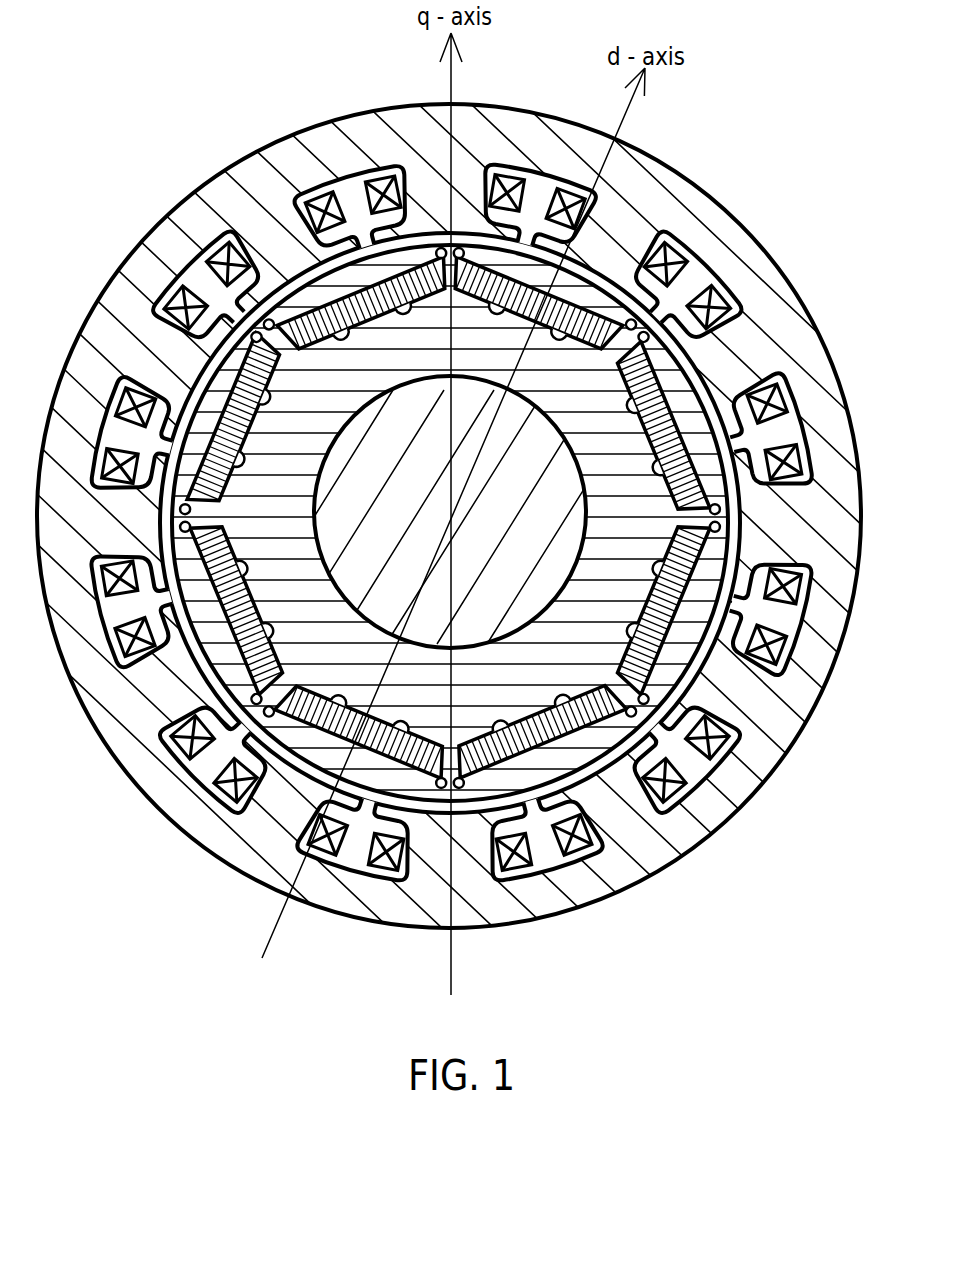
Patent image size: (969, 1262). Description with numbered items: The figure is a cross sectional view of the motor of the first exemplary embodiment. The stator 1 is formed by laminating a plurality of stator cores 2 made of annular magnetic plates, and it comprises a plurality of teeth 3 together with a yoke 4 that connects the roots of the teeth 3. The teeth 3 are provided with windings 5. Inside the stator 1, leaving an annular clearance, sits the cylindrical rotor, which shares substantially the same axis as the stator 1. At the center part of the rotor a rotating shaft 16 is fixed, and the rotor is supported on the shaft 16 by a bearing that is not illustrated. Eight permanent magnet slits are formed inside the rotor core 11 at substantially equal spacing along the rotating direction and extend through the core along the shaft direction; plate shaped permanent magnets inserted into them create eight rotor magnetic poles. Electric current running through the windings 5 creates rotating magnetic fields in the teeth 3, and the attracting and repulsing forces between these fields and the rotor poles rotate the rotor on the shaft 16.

The stator 1 is at (682, 223).
The stator core 2 is at (638, 203).
The tooth 3 is at (270, 235).
The yoke 4 is at (250, 190).
The winding 5 is at (750, 395).
The rotor core 11 is at (600, 420).
The rotating shaft 16 is at (503, 578).